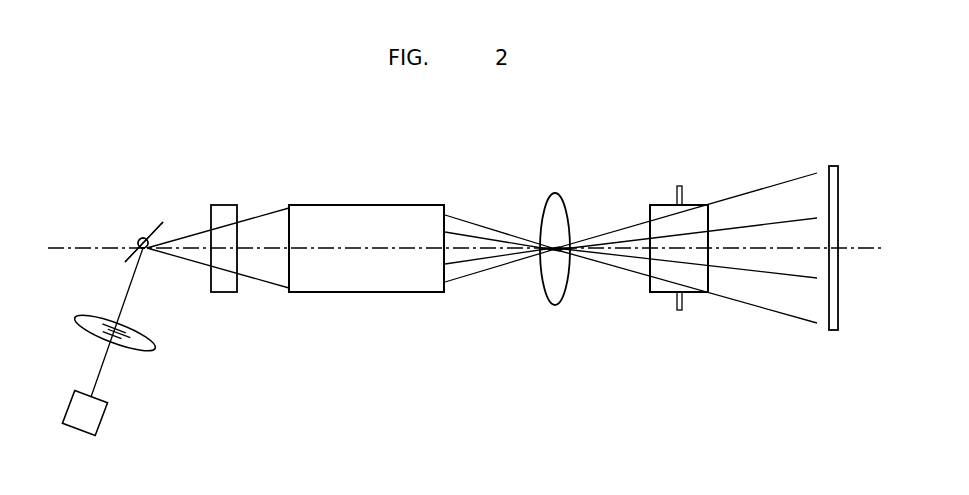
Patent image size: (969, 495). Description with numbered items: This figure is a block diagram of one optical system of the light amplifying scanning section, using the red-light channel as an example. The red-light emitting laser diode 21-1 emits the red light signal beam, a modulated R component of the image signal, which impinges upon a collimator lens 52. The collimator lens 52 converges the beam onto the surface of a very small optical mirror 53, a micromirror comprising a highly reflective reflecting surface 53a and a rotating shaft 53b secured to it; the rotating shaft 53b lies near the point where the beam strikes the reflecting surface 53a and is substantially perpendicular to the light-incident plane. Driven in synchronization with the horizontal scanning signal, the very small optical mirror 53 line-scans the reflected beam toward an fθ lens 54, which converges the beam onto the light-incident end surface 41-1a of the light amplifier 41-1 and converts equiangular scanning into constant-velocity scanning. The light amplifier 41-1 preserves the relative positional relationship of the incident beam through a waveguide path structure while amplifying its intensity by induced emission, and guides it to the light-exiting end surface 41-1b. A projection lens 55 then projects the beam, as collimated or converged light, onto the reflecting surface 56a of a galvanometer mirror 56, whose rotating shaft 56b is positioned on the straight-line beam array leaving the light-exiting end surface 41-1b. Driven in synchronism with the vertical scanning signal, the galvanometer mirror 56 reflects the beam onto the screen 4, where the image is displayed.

The red-light emitting laser diode 21-1 is at (108, 403).
The collimator lens 52 is at (155, 350).
The very small optical mirror 53 is at (152, 238).
The reflecting surface 53a is at (128, 262).
The rotating shaft 53b is at (137, 240).
The fθ lens 54 is at (222, 205).
The light amplifier 41-1 is at (350, 292).
The light-incident end surface 41-1a is at (289, 272).
The light-exiting end surface 41-1b is at (445, 265).
The projection lens 55 is at (557, 192).
The galvanometer mirror 56 is at (690, 203).
The reflecting surface 56a is at (648, 263).
The rotating shaft 56b is at (683, 300).
The screen 4 is at (832, 166).